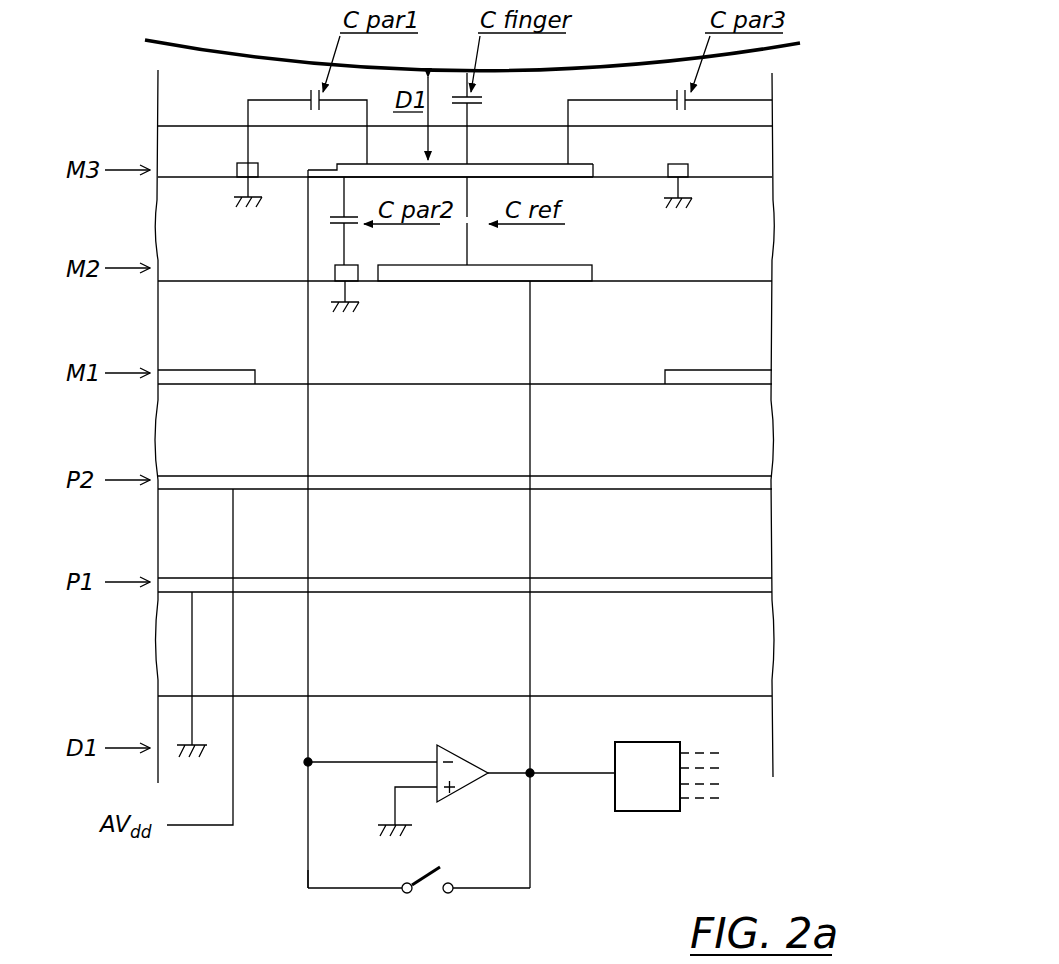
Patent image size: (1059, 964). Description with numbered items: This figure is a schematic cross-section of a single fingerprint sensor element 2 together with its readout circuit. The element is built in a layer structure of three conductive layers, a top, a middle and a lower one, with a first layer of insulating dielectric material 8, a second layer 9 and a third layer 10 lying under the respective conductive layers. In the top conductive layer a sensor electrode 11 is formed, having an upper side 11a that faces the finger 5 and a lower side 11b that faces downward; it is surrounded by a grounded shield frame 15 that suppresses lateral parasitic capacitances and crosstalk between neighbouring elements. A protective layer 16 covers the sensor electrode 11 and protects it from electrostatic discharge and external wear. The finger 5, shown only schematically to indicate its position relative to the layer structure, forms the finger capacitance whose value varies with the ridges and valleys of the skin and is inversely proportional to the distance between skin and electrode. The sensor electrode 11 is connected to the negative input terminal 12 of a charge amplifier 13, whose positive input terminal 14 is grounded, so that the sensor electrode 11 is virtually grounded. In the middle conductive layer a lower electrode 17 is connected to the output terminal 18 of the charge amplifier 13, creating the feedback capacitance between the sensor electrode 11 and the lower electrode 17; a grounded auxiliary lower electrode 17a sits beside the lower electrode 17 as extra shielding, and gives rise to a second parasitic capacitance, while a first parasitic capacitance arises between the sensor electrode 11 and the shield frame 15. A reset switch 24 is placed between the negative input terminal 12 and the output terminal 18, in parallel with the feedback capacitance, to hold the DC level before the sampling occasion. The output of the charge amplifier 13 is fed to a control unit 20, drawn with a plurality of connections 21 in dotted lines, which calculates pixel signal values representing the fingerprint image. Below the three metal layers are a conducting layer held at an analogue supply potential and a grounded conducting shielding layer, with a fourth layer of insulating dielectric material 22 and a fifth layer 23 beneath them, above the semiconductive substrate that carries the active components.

The fingerprint sensor element 2 is at (472, 929).
The finger 5 is at (767, 40).
The first layer of insulating dielectric material 8 is at (750, 240).
The second layer of insulating dielectric material 9 is at (743, 345).
The third layer of insulating dielectric material 10 is at (740, 447).
The sensor electrode 11 is at (592, 117).
The upper side of sensor electrode 11a is at (523, 164).
The lower side of sensor electrode 11b is at (573, 178).
The negative input terminal 12 is at (403, 760).
The charge amplifier 13 is at (502, 777).
The positive input terminal 14 is at (410, 786).
The shield frame 15 is at (243, 163).
The protective layer 16 is at (760, 152).
The lower electrode 17 is at (530, 268).
The auxiliary lower electrode 17a is at (340, 268).
The output terminal 18 is at (455, 770).
The control unit 20 is at (657, 800).
The connections 21 is at (738, 789).
The fourth layer of insulating dielectric material 22 is at (742, 552).
The fifth layer of insulating dielectric material 23 is at (740, 665).
The reset switch 24 is at (425, 892).